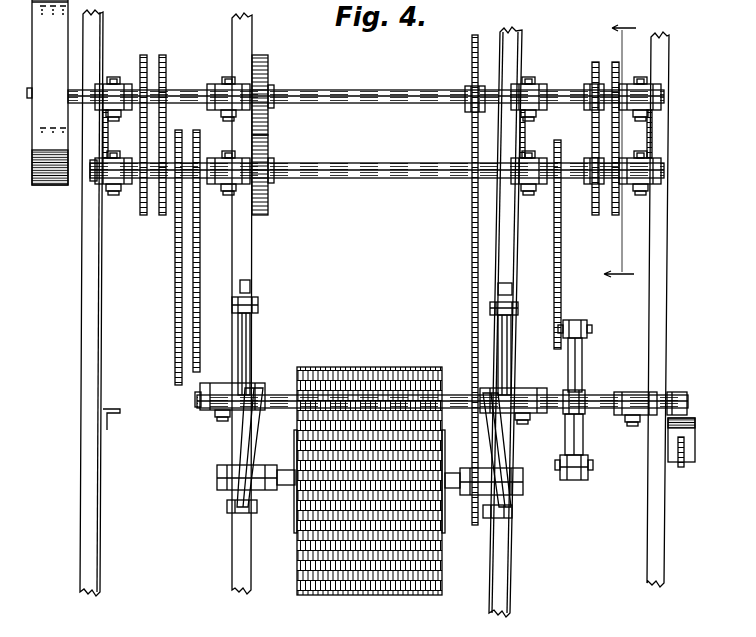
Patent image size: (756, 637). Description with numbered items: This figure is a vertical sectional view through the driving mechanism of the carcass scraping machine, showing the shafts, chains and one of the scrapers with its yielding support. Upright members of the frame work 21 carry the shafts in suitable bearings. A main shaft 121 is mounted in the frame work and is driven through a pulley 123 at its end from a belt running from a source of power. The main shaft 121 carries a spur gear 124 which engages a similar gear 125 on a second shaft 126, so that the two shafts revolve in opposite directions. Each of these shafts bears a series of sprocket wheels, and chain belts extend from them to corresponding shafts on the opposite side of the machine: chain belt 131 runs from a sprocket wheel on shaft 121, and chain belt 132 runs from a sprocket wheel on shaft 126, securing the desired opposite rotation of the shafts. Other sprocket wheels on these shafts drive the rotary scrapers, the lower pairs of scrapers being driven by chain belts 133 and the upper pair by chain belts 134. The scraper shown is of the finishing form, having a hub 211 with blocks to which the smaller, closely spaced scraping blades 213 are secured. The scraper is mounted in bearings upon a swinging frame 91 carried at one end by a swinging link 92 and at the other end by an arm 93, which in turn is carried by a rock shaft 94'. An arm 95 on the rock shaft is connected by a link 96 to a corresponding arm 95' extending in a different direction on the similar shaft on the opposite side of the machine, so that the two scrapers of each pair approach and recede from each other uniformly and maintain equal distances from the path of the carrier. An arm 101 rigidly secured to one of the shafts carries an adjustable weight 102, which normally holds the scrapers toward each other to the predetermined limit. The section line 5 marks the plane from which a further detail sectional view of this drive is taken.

The section line 5 5 is at (620, 152).
The frame work 21 is at (237, 38).
The swinging frame 91 is at (232, 490).
The swinging link 92 is at (245, 348).
The arm 93 is at (252, 444).
The rock shaft 94' is at (442, 374).
The arm 95 is at (593, 323).
The arm 95' is at (590, 447).
The link 96 is at (581, 372).
The arm 101 is at (684, 467).
The adjustable weight 102 is at (695, 442).
The main shaft 121 is at (386, 92).
The pulley 123 is at (47, 186).
The spur gear 124 is at (268, 67).
The gear 125 is at (270, 150).
The shaft 126 is at (380, 183).
The chain belt 131 is at (145, 134).
The chain belt 132 is at (163, 121).
The chain belts 133 is at (174, 293).
The chain belts 134 is at (470, 268).
The hub 211 is at (294, 530).
The scraping blades 213 is at (357, 372).